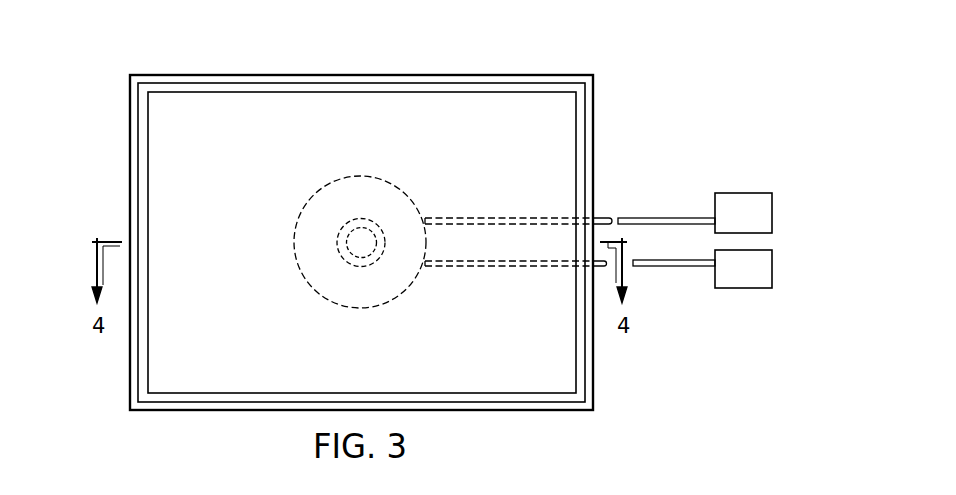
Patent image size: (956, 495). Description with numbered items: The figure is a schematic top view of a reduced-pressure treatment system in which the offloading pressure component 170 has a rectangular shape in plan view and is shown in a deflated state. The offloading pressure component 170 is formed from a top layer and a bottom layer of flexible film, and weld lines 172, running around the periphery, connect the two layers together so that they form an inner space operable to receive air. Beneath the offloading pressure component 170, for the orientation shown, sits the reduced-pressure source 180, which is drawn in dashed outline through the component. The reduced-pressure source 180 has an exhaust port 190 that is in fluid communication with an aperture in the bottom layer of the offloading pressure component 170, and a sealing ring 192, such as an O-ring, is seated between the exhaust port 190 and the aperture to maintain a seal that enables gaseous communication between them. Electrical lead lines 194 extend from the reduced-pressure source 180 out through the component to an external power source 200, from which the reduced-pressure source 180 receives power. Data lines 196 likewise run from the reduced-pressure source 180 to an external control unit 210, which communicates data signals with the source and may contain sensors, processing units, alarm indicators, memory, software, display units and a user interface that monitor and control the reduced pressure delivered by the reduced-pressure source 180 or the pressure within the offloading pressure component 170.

The offloading pressure component 170 is at (205, 105).
The weld lines 172 is at (473, 395).
The reduced-pressure source 180 is at (327, 183).
The exhaust port 190 is at (359, 239).
The sealing ring 192 is at (339, 253).
The electrical lead lines 194 is at (630, 217).
The data lines 196 is at (653, 268).
The external power source 200 is at (743, 193).
The external control unit 210 is at (745, 288).